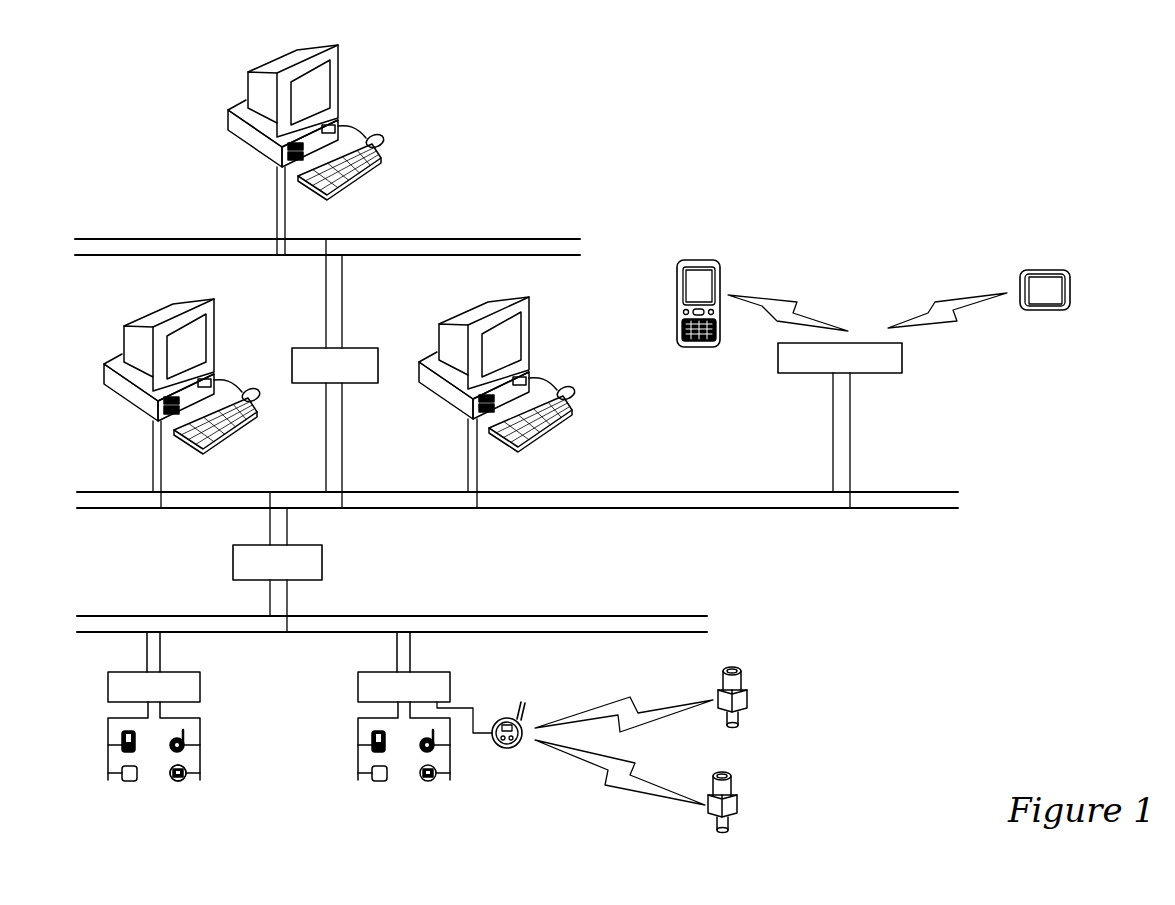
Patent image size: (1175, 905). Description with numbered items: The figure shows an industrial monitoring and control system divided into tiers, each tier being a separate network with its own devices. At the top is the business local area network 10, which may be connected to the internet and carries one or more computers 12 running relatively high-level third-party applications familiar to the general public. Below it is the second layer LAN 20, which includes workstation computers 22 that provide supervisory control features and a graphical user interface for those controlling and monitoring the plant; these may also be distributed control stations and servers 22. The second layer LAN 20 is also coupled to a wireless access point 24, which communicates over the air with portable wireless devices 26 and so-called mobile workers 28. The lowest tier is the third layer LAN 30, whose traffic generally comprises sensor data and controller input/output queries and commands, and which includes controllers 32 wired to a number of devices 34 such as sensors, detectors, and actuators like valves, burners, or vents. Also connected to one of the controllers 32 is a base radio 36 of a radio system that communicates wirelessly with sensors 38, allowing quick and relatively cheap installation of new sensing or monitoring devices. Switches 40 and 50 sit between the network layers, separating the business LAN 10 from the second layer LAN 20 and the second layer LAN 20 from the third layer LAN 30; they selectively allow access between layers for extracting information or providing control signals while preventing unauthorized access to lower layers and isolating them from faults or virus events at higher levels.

The business local area network 10 is at (490, 238).
The computer 12 is at (338, 78).
The second layer LAN 20 is at (550, 508).
The workstation computer 22 is at (214, 331).
The wireless access point 24 is at (878, 372).
The portable wireless device 26 is at (700, 259).
The mobile worker 28 is at (1043, 270).
The third layer LAN 30 is at (651, 616).
The controller 32 is at (200, 680).
The device 34 is at (188, 768).
The base radio 36 is at (524, 715).
The sensor 38 is at (740, 676).
The switch 40 is at (363, 346).
The switch 50 is at (322, 562).